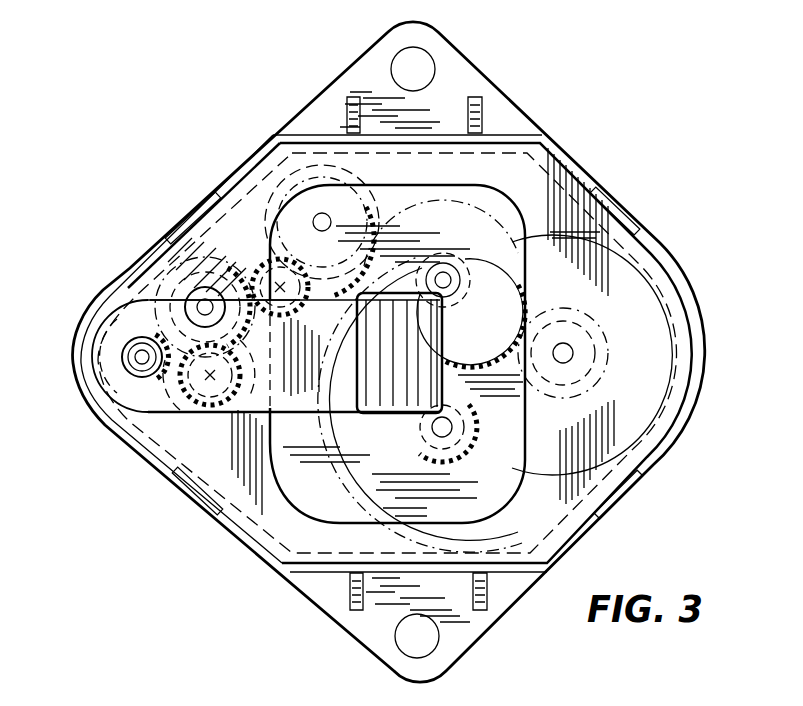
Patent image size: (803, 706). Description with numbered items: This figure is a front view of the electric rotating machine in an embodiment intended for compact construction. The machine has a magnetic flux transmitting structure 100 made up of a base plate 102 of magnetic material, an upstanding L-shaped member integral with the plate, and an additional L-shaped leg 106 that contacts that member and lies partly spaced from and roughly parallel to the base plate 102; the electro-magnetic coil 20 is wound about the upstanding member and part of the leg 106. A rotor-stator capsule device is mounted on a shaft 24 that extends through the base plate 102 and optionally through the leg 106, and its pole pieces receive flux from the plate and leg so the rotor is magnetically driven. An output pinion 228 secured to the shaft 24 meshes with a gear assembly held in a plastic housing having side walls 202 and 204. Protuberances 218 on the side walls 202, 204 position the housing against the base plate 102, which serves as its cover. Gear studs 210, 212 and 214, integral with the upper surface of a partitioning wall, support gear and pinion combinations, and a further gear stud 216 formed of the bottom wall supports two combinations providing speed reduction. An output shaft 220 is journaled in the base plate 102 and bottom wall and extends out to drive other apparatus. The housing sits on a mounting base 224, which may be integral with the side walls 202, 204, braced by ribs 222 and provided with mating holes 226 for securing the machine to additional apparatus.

The electro-magnetic coil 20 is at (433, 186).
The shaft 24 is at (137, 362).
The magnetic flux transmitting structure 100 is at (682, 163).
The base plate 102 is at (523, 163).
The L-shaped leg 106 is at (143, 303).
The side wall 202 is at (72, 348).
The side wall 204 is at (703, 398).
The gear stud 210 is at (221, 406).
The gear stud 212 is at (361, 327).
The gear stud 214 is at (312, 222).
The gear stud 216 is at (432, 434).
The protuberances 218 is at (200, 214).
The output shaft 220 is at (575, 357).
The bracing members or ribs 222 is at (470, 110).
The mounting base 224 is at (477, 82).
The mating holes 226 is at (403, 50).
The output pinion 228 is at (132, 324).